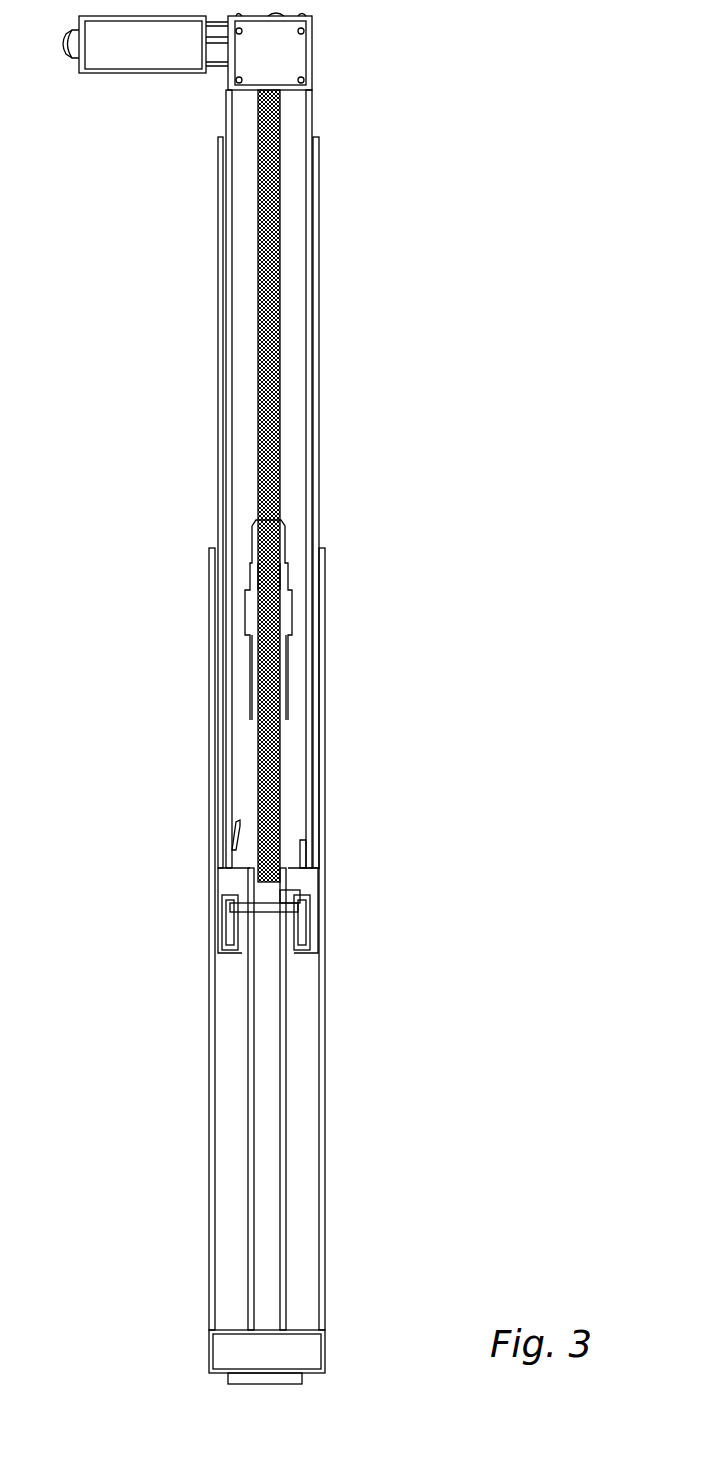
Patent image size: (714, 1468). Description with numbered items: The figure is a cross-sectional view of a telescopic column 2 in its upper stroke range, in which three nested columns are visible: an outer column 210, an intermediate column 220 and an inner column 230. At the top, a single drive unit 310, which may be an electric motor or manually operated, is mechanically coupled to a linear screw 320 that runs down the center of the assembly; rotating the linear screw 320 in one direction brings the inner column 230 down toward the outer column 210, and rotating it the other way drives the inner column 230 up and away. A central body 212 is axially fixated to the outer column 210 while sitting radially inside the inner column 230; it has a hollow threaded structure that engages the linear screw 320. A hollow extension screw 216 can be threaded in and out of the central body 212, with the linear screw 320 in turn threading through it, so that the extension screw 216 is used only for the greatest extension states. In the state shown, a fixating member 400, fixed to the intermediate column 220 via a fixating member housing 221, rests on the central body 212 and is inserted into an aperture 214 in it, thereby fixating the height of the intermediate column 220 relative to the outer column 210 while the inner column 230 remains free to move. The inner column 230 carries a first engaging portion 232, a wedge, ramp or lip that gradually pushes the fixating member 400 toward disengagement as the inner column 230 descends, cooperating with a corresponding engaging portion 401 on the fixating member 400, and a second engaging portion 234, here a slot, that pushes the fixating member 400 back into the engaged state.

The telescopic column 2 is at (462, 660).
The outer column 210 is at (325, 1235).
The central body 212 is at (286, 1130).
The aperture 214 is at (300, 892).
The hollow extension screw 216 is at (250, 548).
The intermediate column 220 is at (320, 432).
The fixating member housing 221 is at (318, 948).
The inner column 230 is at (312, 107).
The first engaging portion 232 is at (236, 822).
The second engaging portion 234 is at (312, 845).
The drive unit 310 is at (127, 73).
The linear screw 320 is at (258, 243).
The fixating member 400 is at (310, 908).
The corresponding engaging portion 401 is at (235, 900).